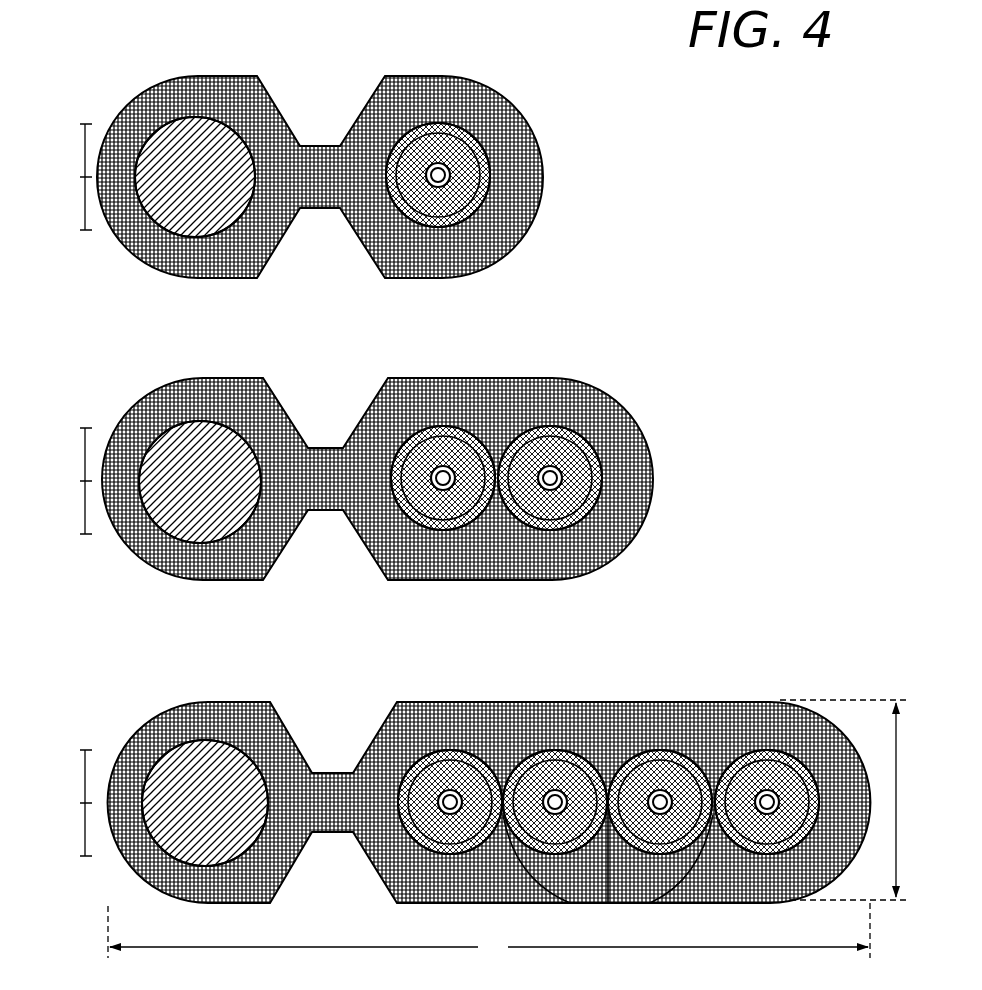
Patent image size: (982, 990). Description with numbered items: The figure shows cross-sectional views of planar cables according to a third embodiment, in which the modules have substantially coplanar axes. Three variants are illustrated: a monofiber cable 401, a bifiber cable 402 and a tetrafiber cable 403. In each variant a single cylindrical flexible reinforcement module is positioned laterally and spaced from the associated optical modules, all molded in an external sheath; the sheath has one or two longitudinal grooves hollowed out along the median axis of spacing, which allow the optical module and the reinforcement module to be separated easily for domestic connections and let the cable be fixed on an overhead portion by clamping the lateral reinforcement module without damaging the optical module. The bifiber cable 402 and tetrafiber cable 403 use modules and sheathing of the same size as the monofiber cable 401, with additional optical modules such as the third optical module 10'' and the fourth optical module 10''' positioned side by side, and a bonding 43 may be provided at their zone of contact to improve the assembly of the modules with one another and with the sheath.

The optical module 10'' is at (677, 755).
The optical module 10''' is at (787, 755).
The bonding 43 is at (570, 903).
The monofiber cable 401 is at (451, 163).
The bifiber cable 402 is at (453, 456).
The tetrafiber cable 403 is at (476, 782).